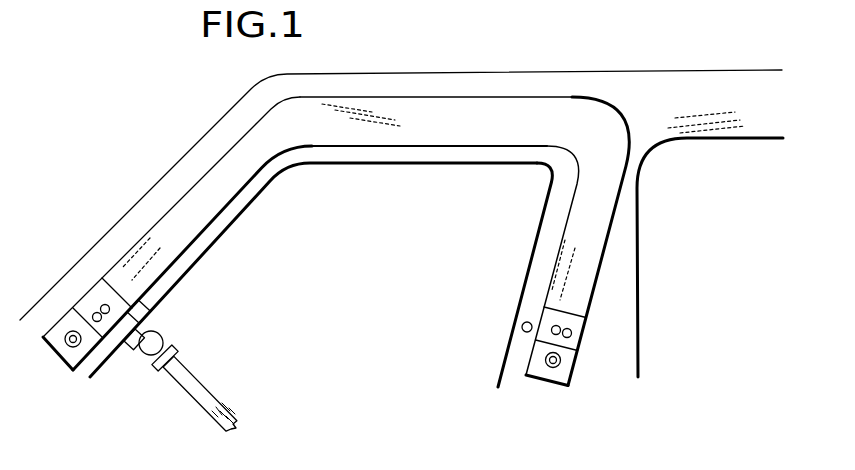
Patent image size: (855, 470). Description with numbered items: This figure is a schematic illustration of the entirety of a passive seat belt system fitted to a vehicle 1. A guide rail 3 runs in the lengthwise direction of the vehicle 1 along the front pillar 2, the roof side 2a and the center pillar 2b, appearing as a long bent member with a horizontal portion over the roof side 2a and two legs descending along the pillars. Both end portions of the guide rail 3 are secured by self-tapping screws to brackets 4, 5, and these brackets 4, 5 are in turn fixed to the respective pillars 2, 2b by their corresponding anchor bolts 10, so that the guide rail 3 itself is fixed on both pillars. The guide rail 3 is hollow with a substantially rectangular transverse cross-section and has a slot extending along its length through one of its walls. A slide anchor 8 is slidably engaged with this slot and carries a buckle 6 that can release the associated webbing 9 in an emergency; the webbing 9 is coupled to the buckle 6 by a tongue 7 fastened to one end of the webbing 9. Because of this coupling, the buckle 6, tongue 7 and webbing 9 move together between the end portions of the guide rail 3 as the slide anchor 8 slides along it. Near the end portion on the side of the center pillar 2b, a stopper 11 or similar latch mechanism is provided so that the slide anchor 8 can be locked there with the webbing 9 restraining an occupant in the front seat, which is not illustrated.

The vehicle 1 is at (637, 67).
The front pillar 2 is at (100, 246).
The roof side 2a is at (447, 90).
The center pillar 2b is at (620, 280).
The guide rail 3 is at (213, 202).
The bracket 4 is at (58, 356).
The bracket 5 is at (565, 369).
The buckle 6 is at (158, 335).
The tongue 7 is at (152, 373).
The slide anchor 8 is at (131, 321).
The webbing 9 is at (190, 387).
The anchor bolt 10 is at (65, 337).
The stopper 11 is at (521, 326).